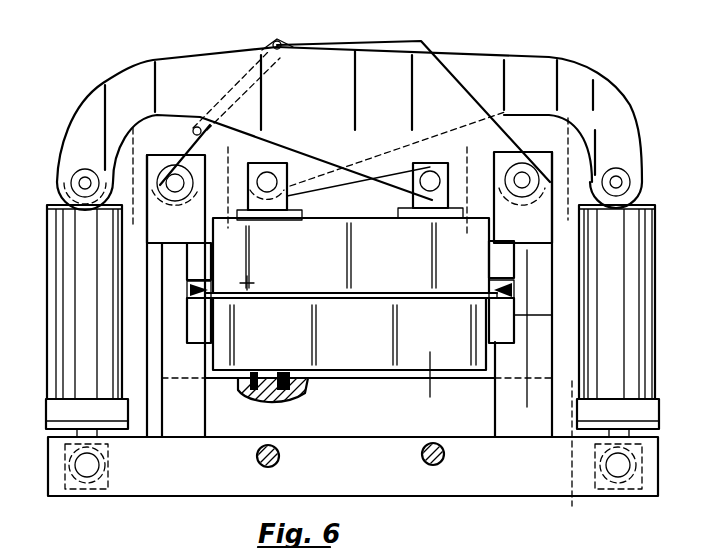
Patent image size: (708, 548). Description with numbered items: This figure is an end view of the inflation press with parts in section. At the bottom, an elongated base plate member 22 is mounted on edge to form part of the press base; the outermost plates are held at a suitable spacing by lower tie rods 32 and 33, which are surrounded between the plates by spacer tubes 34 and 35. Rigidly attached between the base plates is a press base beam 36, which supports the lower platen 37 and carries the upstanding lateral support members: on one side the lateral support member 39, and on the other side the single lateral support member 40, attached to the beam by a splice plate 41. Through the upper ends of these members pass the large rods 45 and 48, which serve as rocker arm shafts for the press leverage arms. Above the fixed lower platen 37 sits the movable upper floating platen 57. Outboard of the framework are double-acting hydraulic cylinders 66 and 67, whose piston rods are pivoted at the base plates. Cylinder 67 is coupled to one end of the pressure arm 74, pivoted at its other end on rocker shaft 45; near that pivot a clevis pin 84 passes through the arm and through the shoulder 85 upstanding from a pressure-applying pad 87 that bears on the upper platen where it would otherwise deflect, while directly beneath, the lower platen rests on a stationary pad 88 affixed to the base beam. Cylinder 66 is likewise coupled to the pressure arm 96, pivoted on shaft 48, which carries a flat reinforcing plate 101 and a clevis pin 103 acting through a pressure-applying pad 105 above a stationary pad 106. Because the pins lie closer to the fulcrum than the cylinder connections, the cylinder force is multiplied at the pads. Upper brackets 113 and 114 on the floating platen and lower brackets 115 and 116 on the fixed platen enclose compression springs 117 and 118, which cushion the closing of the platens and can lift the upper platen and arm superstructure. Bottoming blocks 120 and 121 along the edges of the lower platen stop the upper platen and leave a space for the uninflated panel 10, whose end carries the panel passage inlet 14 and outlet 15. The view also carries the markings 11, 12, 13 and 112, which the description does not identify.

The uninflated panel 10 is at (228, 142).
The section line 11- 11 is at (467, 142).
The section line 12- 12 is at (416, 352).
The section line 13- 13 is at (568, 113).
The panel passage inlet 14 is at (114, 128).
The panel passage outlet 15 is at (572, 376).
The base plate member 22 is at (488, 497).
The lower tie rod 32 is at (279, 462).
The lower tie rod 33 is at (421, 462).
The spacer tube 34 is at (281, 456).
The spacer tube 35 is at (445, 453).
The press base beam 36 is at (362, 416).
The lower platen 37 is at (362, 346).
The lateral support member 39 is at (163, 356).
The lateral support member 40 is at (542, 275).
The splice plate 41 is at (538, 347).
The rocker arm shaft 45 is at (172, 186).
The rocker arm shaft 48 is at (522, 185).
The upper floating platen 57 is at (388, 253).
The hydraulic cylinder 66 is at (62, 297).
The hydraulic cylinder 67 is at (640, 278).
The pressure arm 74 is at (620, 118).
The clevis pin 84 is at (270, 170).
The shoulder 85 is at (213, 170).
The pressure-applying pad 87 is at (282, 218).
The stationary pad 88 is at (265, 368).
The pressure arm 96 is at (90, 100).
The flat reinforcing plate 101 is at (482, 158).
The clevis pin 103 is at (425, 162).
The pressure-applying pad 105 is at (398, 212).
The stationary pad 106 is at (418, 378).
The pivot pin 112 is at (272, 40).
The upper bracket 113 is at (195, 255).
The upper bracket 114 is at (488, 266).
The lower bracket 115 is at (200, 326).
The lower bracket 116 is at (503, 328).
The compression spring 117 is at (188, 292).
The compression spring 118 is at (508, 290).
The bottoming block 120 is at (256, 283).
The bottoming block 121 is at (468, 296).